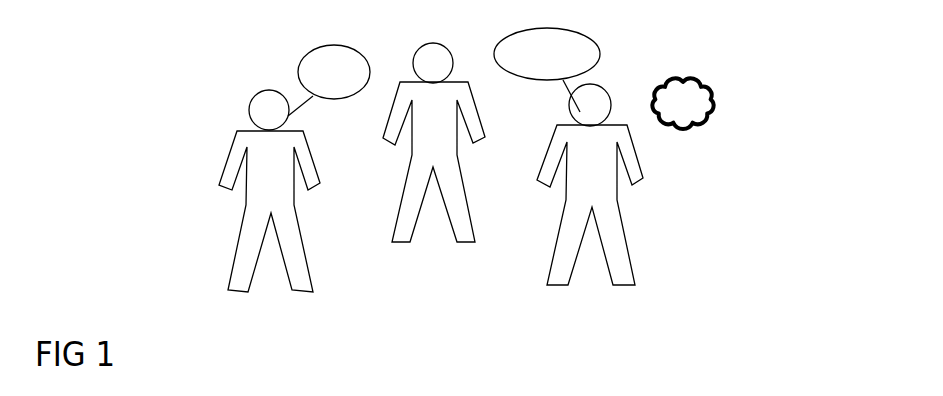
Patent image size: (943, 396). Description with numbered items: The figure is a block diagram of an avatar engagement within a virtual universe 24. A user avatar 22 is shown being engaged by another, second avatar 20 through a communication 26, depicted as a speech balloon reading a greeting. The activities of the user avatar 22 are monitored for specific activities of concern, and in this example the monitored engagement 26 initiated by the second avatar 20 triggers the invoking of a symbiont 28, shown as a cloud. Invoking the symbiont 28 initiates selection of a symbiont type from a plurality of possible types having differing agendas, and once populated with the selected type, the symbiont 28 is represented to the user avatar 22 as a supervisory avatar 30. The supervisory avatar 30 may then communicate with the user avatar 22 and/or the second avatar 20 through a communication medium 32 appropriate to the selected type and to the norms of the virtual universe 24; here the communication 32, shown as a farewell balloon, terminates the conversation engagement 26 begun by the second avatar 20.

The second avatar 20 is at (237, 143).
The user avatar 22 is at (402, 243).
The virtual universe 24 is at (750, 315).
The communication 26 is at (315, 53).
The symbiont 28 is at (715, 108).
The supervisory avatar 30 is at (625, 242).
The communication medium 32 is at (590, 47).